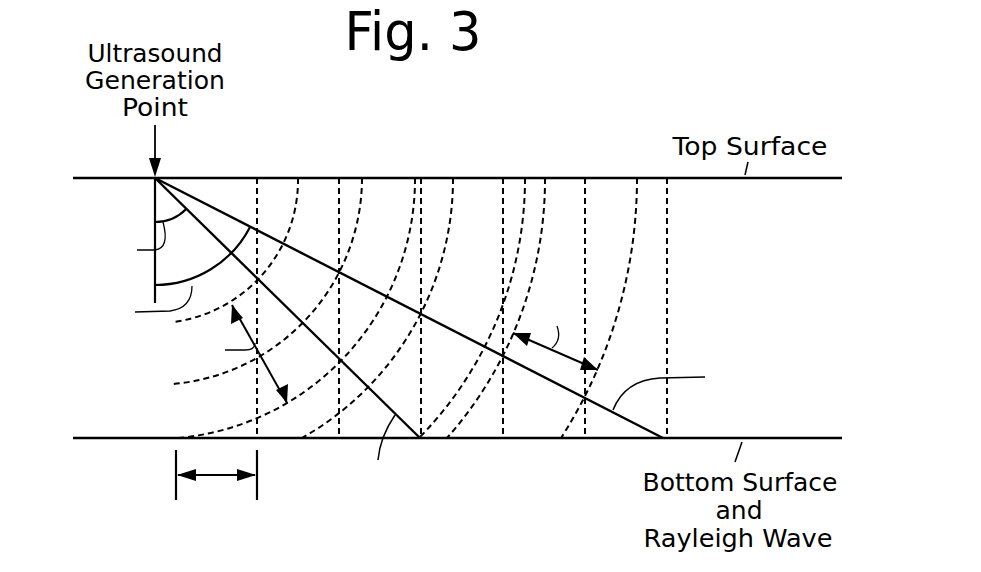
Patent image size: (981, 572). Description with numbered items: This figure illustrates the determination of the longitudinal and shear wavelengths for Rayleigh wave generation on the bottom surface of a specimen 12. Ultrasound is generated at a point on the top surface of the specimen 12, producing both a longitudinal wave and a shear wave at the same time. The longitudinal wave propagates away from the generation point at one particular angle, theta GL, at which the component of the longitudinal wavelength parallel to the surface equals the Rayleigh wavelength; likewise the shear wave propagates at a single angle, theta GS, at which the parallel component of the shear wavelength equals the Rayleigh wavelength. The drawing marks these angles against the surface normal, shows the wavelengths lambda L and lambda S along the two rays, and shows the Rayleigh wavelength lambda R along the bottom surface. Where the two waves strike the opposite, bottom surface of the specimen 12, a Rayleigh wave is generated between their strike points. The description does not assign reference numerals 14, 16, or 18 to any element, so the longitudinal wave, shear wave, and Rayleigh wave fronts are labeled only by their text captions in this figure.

The specimen 12 is at (101, 440).
The longitudinal wave (unnumbered in figure) 14 is at (299, 347).
The shear wave (unnumbered in figure) 16 is at (430, 308).
The Rayleigh wave fronts (unnumbered in figure) 18 is at (421, 354).